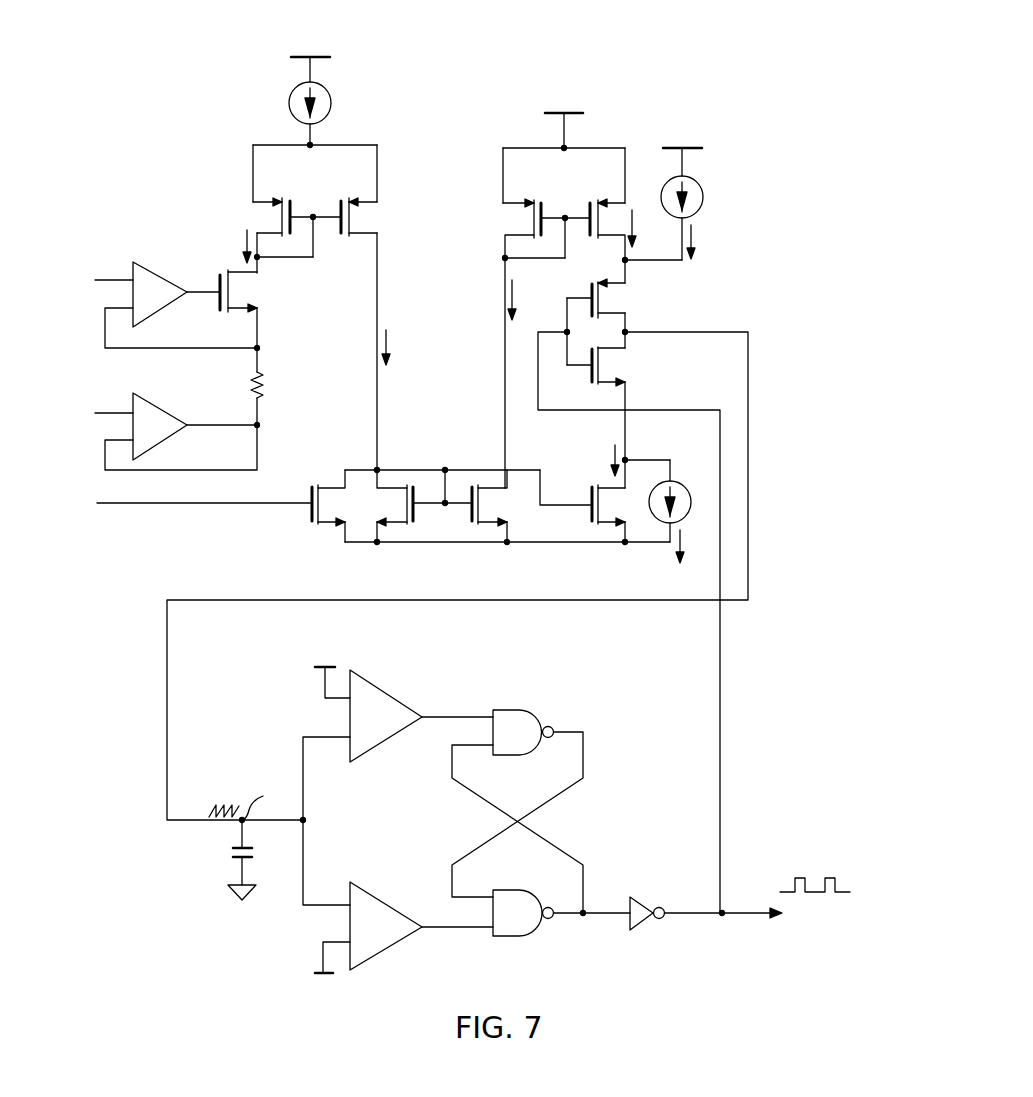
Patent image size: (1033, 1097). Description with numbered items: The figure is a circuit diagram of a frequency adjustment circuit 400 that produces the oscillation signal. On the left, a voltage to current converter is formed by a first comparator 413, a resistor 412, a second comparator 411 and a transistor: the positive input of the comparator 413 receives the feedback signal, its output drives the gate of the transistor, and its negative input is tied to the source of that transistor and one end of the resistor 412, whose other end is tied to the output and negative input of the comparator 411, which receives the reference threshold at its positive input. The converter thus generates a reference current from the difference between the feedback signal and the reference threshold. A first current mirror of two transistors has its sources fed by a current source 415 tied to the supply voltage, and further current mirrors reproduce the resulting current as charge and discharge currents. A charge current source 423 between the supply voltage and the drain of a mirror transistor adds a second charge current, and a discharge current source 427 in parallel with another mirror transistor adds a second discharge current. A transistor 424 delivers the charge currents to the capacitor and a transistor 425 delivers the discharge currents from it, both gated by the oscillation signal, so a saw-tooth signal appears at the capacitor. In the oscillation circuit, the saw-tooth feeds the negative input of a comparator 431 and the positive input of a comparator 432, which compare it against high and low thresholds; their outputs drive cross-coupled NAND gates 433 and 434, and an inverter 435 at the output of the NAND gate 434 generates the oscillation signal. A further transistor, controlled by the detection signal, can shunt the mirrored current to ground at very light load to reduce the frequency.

The frequency adjustment circuit 400 is at (702, 42).
The comparator 411 is at (164, 424).
The resistor 412 is at (279, 385).
The comparator 413 is at (164, 291).
The current source 415 is at (334, 89).
The charge current source 423 is at (705, 192).
The transistor 424 is at (596, 287).
The transistor 425 is at (596, 342).
The discharge current source 427 is at (670, 500).
The comparator 431 is at (386, 713).
The comparator 432 is at (386, 922).
The NAND gate 433 is at (523, 720).
The NAND gate 434 is at (523, 901).
The inverter 435 is at (652, 903).